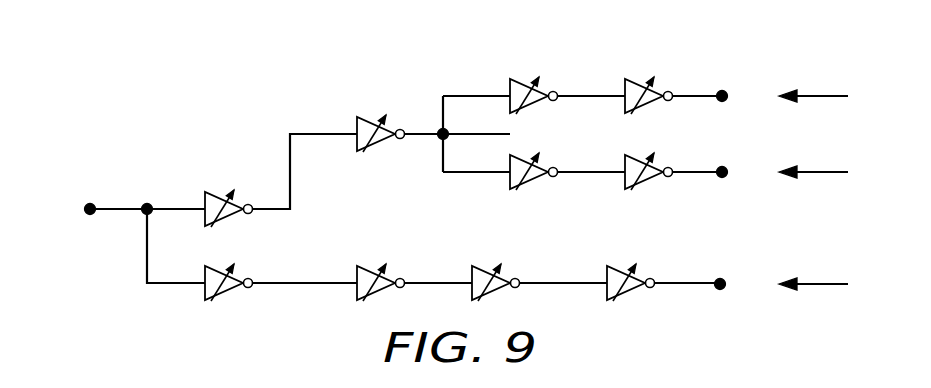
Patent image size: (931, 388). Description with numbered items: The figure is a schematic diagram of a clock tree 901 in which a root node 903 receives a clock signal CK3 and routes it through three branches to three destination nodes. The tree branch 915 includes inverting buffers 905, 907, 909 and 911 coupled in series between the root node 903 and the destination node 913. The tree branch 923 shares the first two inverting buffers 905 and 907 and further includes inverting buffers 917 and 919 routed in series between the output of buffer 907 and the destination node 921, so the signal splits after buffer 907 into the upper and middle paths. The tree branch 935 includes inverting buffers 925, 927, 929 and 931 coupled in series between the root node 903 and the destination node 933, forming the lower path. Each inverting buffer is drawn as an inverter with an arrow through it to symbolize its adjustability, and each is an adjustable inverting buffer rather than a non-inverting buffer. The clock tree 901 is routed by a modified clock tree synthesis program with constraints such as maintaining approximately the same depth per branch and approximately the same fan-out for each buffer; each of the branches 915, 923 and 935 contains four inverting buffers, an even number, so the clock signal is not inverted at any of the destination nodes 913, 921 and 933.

The clock tree 901 is at (198, 105).
The root node 903 is at (64, 197).
The inverting buffer 905 is at (226, 197).
The inverting buffer 907 is at (381, 118).
The inverting buffer 909 is at (534, 81).
The inverting buffer 911 is at (649, 83).
The destination node 913 is at (720, 83).
The tree branch 915 is at (833, 95).
The inverting buffer 917 is at (534, 159).
The inverting buffer 919 is at (649, 157).
The destination node 921 is at (725, 159).
The tree branch 923 is at (833, 172).
The inverting buffer 925 is at (226, 269).
The inverting buffer 927 is at (384, 268).
The inverting buffer 929 is at (500, 268).
The inverting buffer 931 is at (631, 268).
The destination node 933 is at (722, 269).
The tree branch 935 is at (833, 283).